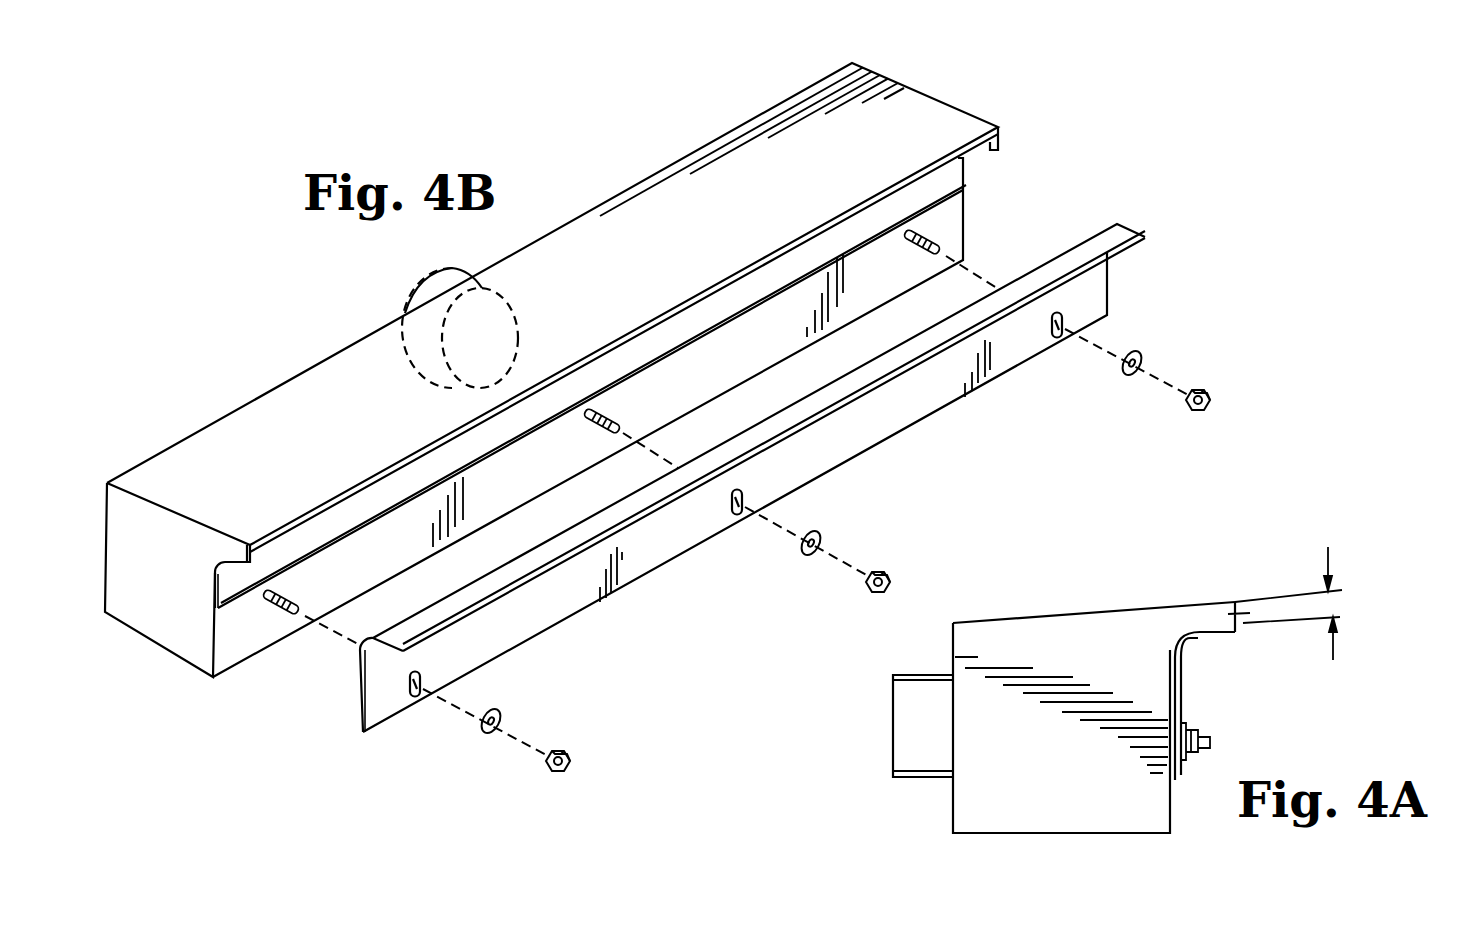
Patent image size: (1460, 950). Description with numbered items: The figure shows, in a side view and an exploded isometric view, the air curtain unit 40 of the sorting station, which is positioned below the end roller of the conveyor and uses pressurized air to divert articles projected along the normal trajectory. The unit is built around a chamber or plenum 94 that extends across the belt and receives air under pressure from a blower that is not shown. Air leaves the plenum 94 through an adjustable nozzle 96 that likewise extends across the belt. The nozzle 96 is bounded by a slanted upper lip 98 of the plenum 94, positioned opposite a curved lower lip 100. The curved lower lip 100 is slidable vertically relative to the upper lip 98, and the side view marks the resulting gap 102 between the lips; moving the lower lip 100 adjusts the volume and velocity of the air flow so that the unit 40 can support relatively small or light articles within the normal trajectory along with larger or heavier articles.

In FIG. 4B, the air curtain unit 40 is at (948, 90).
In FIG. 4A, the air curtain unit 40 is at (1040, 602).
In FIG. 4B, the plenum 94 is at (162, 618).
In FIG. 4A, the plenum 94 is at (1017, 803).
In FIG. 4B, the adjustable nozzle 96 is at (757, 285).
In FIG. 4A, the adjustable nozzle 96 is at (1250, 605).
In FIG. 4B, the slanted upper lip 98 is at (358, 474).
In FIG. 4A, the slanted upper lip 98 is at (1200, 598).
In FIG. 4B, the curved lower lip 100 is at (648, 550).
In FIG. 4A, the curved lower lip 100 is at (1182, 650).
In FIG. 4A, the gap dimension 102 is at (1337, 605).